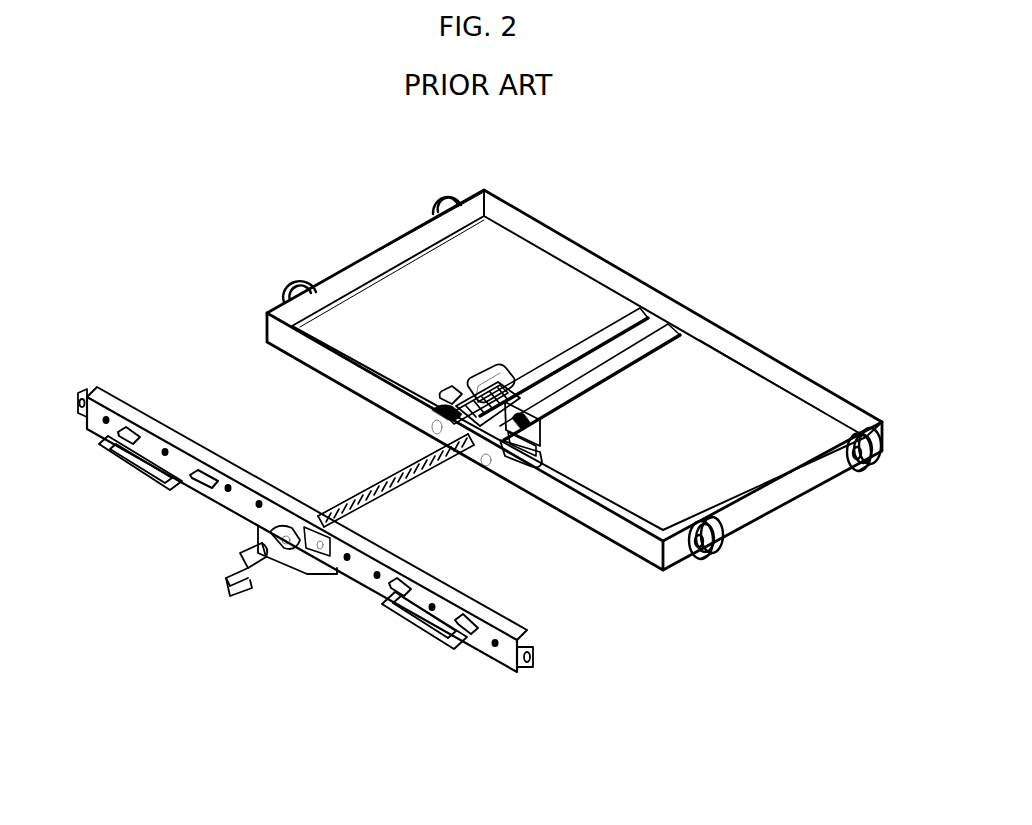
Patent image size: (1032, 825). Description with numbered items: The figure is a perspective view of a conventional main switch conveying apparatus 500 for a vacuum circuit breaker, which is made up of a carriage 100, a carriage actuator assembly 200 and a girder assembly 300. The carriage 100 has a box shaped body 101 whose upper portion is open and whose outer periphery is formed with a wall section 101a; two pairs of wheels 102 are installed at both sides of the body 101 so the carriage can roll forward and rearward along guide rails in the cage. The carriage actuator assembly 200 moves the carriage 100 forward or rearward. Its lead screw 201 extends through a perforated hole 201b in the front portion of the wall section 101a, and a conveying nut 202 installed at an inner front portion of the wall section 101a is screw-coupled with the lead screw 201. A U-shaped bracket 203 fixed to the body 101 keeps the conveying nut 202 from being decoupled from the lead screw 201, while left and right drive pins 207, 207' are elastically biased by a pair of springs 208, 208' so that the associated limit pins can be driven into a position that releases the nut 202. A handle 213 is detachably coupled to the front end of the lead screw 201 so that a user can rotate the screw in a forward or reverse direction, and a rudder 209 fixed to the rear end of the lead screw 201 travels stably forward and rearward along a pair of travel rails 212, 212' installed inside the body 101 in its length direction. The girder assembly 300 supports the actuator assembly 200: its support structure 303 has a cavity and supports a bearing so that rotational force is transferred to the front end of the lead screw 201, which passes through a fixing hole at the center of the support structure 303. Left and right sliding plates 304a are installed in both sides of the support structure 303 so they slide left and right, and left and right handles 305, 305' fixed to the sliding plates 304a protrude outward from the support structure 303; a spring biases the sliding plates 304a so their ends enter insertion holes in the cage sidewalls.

The carriage 100 is at (328, 230).
The box shaped body 101 is at (316, 274).
The wall section 101a is at (405, 231).
The wheels 102 is at (446, 200).
The conveying apparatus 500 is at (824, 364).
The carriage actuator assembly 200 is at (471, 470).
The lead screw 201 is at (441, 473).
The perforated hole 201b is at (491, 464).
The conveying nut 202 is at (500, 395).
The U-shaped bracket 203 is at (542, 460).
The left drive pin 207 is at (475, 372).
The right drive pin 207' is at (610, 438).
The spring 208 is at (414, 423).
The spring 208' is at (568, 424).
The rudder 209 is at (490, 375).
The travel rail 212 is at (577, 316).
The travel rail 212' is at (640, 345).
The handle 213 is at (238, 600).
The girder assembly 300 is at (507, 690).
The support structure 303 is at (480, 652).
The sliding plates 304a is at (88, 390).
The left handle 305 is at (131, 475).
The right handle 305' is at (420, 631).